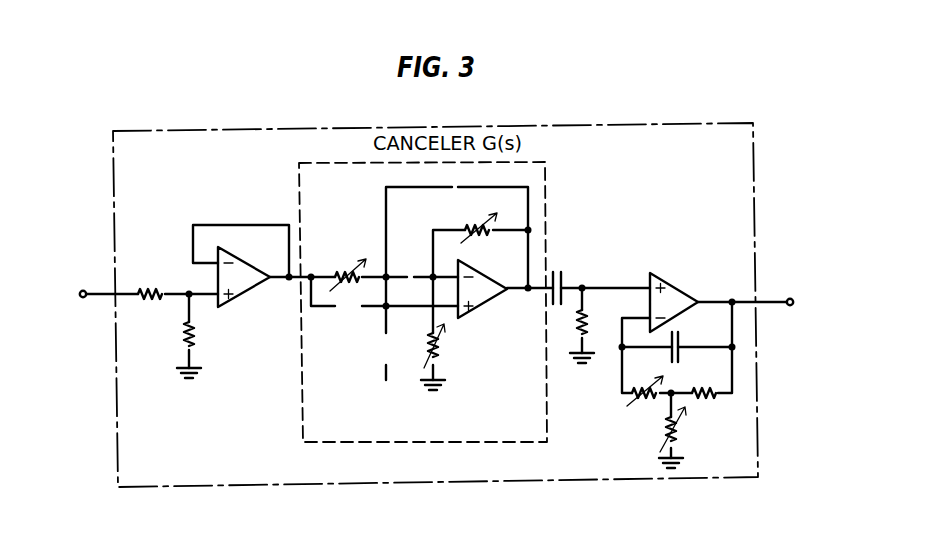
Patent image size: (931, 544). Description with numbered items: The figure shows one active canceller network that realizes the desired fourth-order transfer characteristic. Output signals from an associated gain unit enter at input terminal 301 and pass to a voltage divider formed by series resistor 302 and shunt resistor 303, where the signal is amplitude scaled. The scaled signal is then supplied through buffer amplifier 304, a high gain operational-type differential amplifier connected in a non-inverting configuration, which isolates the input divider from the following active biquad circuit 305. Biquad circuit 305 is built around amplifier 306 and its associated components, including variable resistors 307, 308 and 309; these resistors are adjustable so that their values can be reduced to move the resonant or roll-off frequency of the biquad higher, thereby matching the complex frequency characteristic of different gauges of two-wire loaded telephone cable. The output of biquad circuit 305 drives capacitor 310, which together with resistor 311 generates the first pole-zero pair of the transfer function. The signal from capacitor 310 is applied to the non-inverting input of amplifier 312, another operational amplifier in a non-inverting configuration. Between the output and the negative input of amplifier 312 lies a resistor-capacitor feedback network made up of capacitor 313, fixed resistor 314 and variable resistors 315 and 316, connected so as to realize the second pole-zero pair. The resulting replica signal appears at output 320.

The input terminal 301 is at (82, 292).
The resistor 302 is at (148, 289).
The resistor 303 is at (197, 333).
The buffer amplifier 304 is at (257, 255).
The active biquad circuit 305 is at (302, 402).
The amplifier 306 is at (485, 308).
The variable resistor 307 is at (343, 275).
The variable resistor 308 is at (470, 228).
The variable resistor 309 is at (447, 349).
The capacitor 310 is at (559, 272).
The resistor 311 is at (592, 325).
The amplifier 312 is at (672, 289).
The capacitor 313 is at (678, 333).
The fixed resistor 314 is at (703, 386).
The variable resistor 315 is at (649, 408).
The variable resistor 316 is at (682, 432).
The output 320 is at (791, 298).